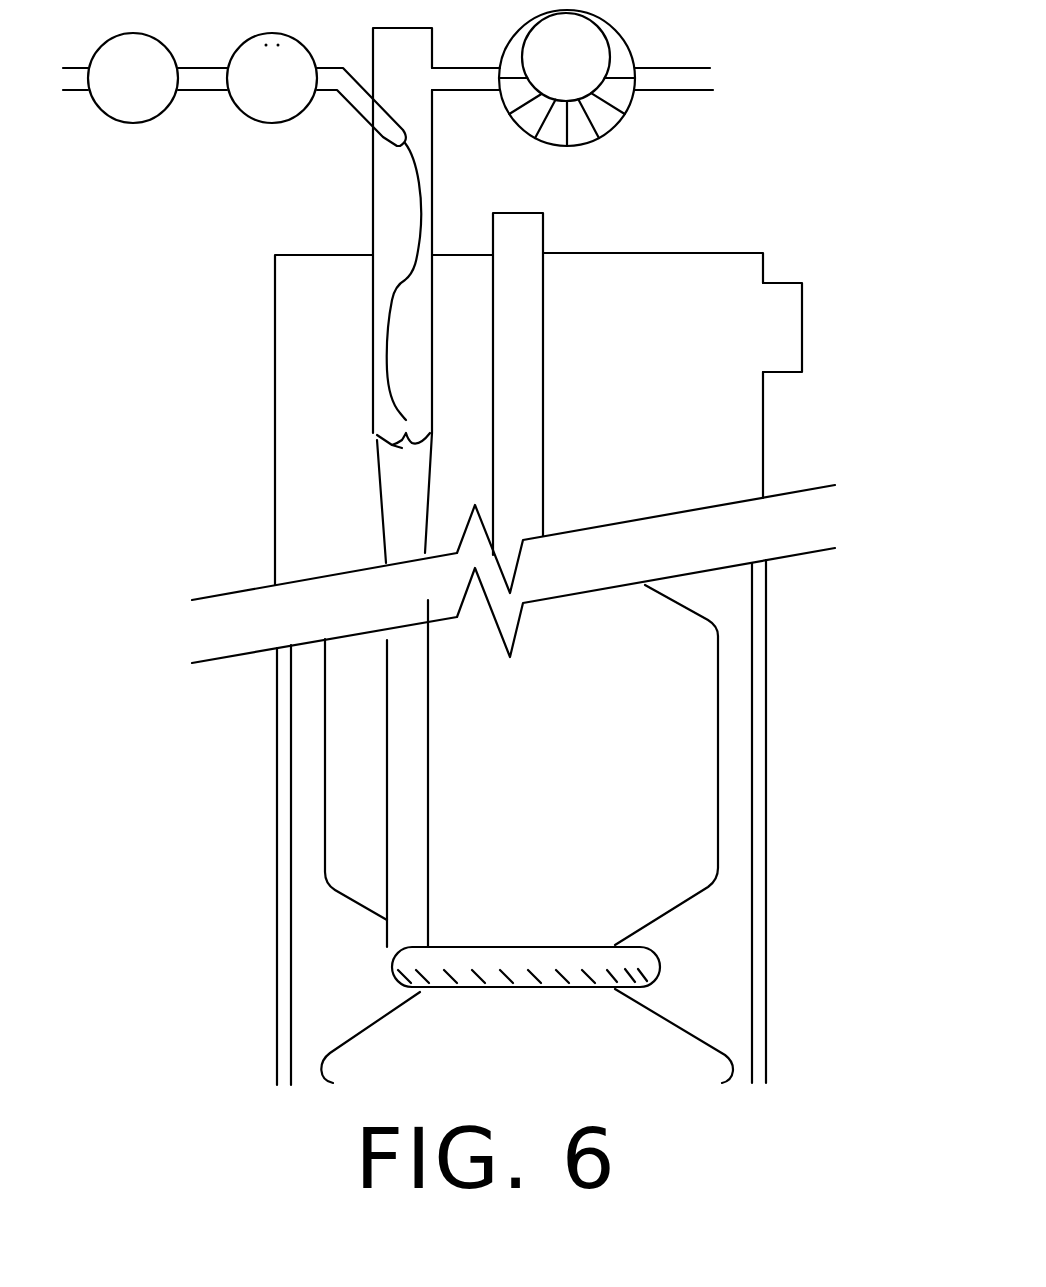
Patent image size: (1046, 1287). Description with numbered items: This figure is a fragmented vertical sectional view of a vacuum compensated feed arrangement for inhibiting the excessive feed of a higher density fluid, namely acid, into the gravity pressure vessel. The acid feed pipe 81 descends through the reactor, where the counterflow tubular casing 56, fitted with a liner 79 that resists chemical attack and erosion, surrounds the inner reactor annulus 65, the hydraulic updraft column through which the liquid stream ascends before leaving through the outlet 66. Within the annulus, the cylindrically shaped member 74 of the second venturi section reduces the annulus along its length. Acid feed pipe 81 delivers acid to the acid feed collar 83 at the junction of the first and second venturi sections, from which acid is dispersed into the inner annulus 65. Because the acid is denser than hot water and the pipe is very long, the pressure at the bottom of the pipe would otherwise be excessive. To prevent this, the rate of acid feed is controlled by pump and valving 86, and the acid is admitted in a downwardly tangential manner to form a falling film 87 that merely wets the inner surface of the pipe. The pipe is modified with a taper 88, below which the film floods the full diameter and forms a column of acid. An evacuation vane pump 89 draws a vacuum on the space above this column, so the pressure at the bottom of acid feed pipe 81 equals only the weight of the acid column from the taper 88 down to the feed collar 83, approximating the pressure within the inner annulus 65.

The counterflow tubular casing 56 is at (768, 972).
The inner reactor annulus 65 is at (712, 437).
The outlet 66 is at (802, 342).
The cylindrically shaped member 74 is at (720, 779).
The liner 79 is at (200, 870).
The acid feed pipe 81 is at (388, 765).
The acid feed collar 83 is at (393, 982).
The pump and valving 86 is at (283, 123).
The falling film 87 is at (388, 382).
The taper 88 is at (377, 435).
The evacuation vane pump 89 is at (613, 27).